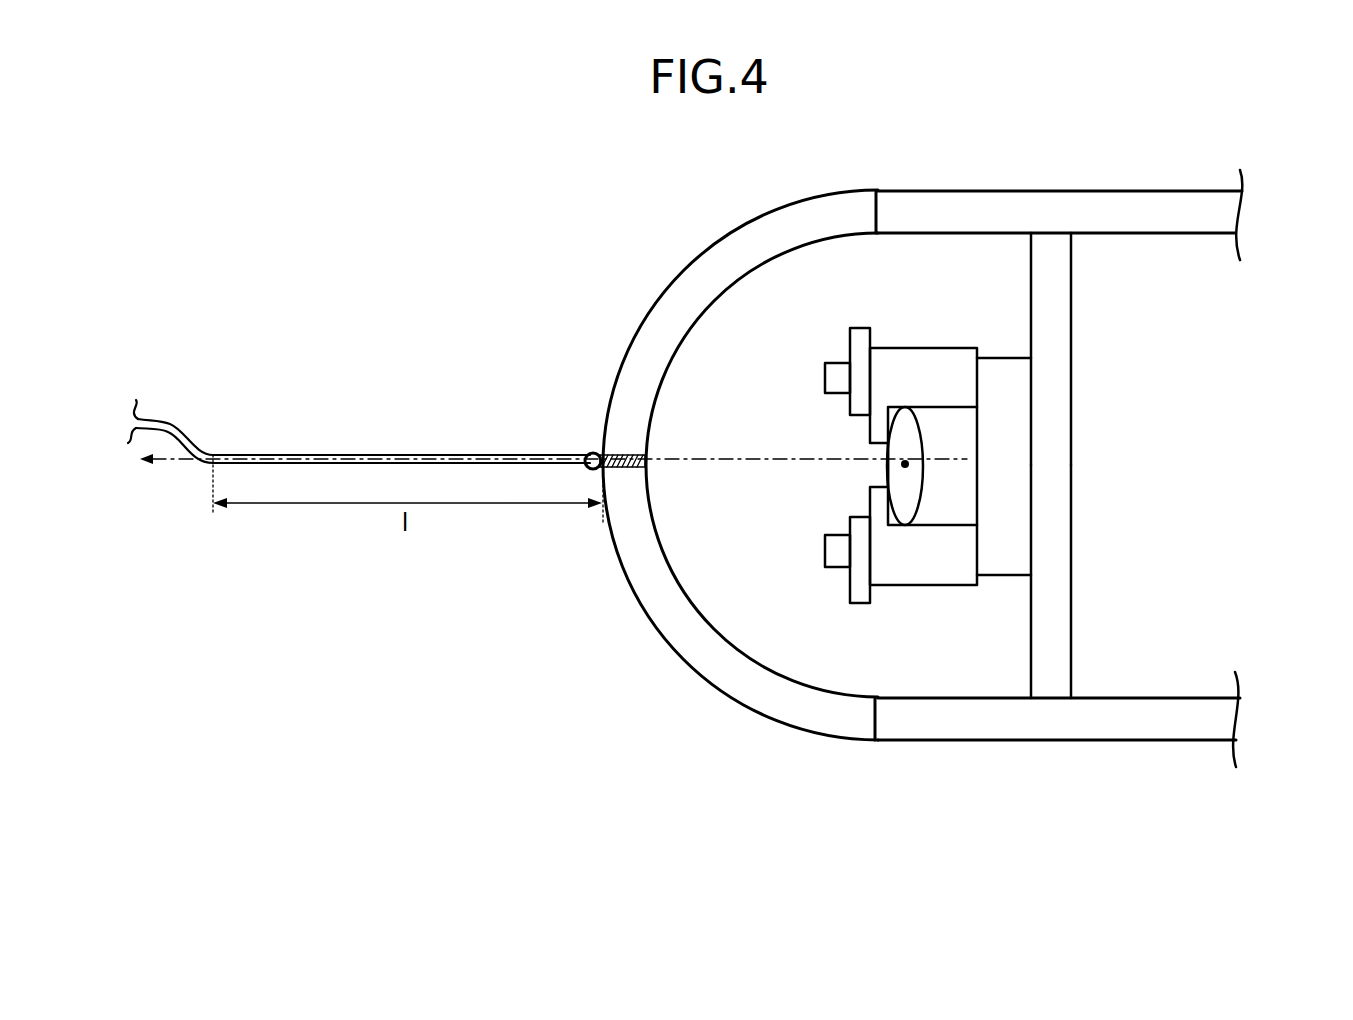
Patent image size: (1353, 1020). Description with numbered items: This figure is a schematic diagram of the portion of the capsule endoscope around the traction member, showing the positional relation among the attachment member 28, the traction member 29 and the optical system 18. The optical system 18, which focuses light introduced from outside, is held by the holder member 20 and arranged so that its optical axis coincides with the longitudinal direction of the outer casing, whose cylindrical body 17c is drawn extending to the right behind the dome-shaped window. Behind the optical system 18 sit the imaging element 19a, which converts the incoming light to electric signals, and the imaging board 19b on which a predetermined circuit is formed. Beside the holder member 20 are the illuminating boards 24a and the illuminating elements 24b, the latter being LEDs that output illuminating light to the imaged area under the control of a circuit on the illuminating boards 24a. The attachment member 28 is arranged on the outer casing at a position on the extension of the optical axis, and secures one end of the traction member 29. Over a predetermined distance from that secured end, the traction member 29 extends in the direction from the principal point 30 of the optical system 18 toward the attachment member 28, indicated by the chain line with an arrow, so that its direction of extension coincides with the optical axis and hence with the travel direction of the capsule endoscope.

The cylindrical body 17c is at (920, 725).
The optical system 18 is at (907, 505).
The imaging element 19a is at (1015, 540).
The imaging board 19b is at (1060, 651).
The holder member 20 is at (932, 367).
The illuminating board 24a is at (860, 343).
The illuminating element 24b is at (838, 377).
The attachment member 28 is at (622, 470).
The traction member 29 is at (405, 455).
The principal point 30 is at (905, 464).